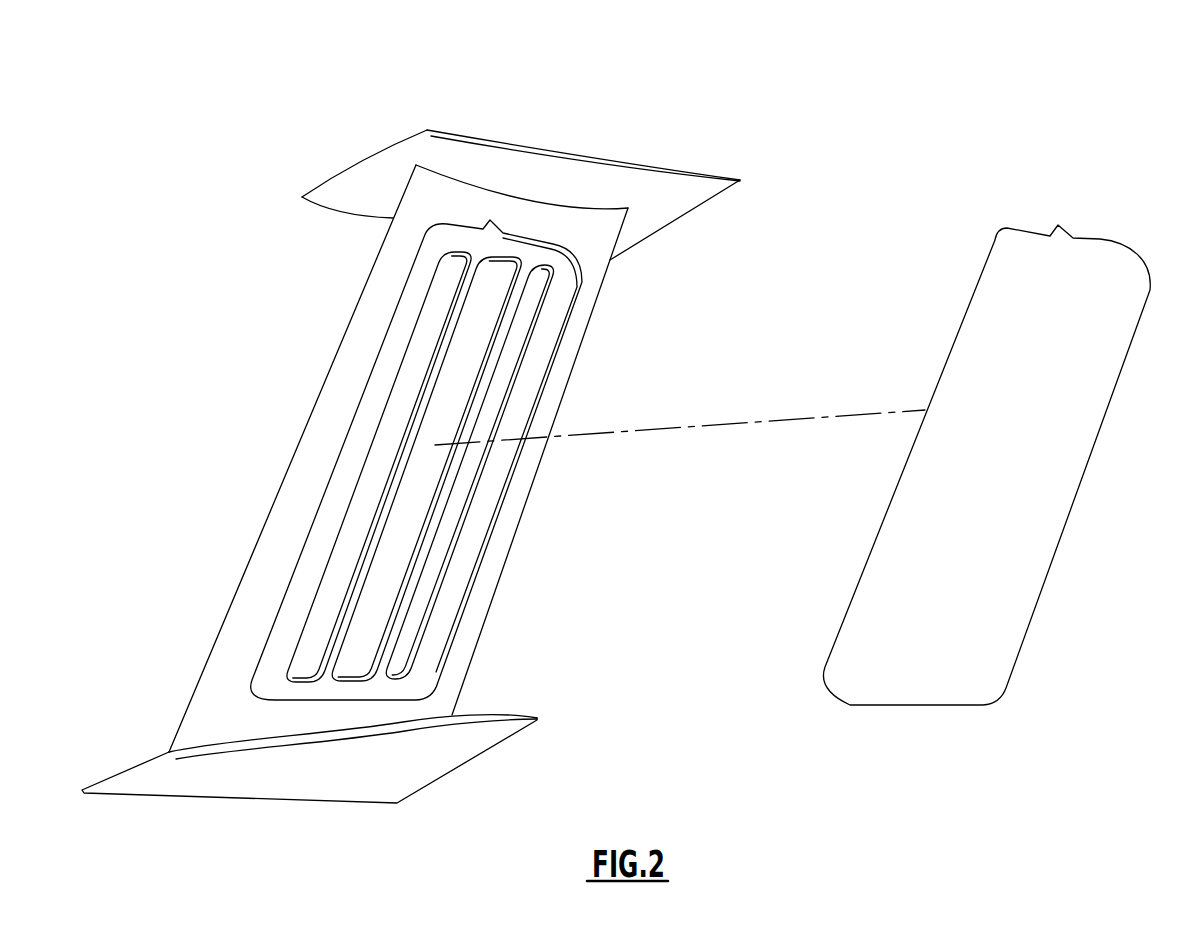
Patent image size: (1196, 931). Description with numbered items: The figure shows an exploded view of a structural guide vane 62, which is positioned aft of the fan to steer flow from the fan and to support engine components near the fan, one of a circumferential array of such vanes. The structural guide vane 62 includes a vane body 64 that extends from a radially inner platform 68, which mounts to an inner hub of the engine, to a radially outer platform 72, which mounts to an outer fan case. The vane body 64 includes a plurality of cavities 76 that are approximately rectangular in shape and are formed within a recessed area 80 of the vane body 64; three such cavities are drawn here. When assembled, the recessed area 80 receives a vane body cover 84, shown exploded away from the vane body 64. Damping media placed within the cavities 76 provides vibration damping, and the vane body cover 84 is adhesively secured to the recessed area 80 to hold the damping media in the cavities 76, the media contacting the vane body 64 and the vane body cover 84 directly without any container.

The structural guide vane 62 is at (875, 92).
The vane body 64 is at (573, 342).
The radially inner platform 68 is at (510, 714).
The radially outer platform 72 is at (713, 172).
The cavities 76 is at (356, 556).
The recessed area 80 is at (495, 478).
The vane body cover 84 is at (1067, 453).